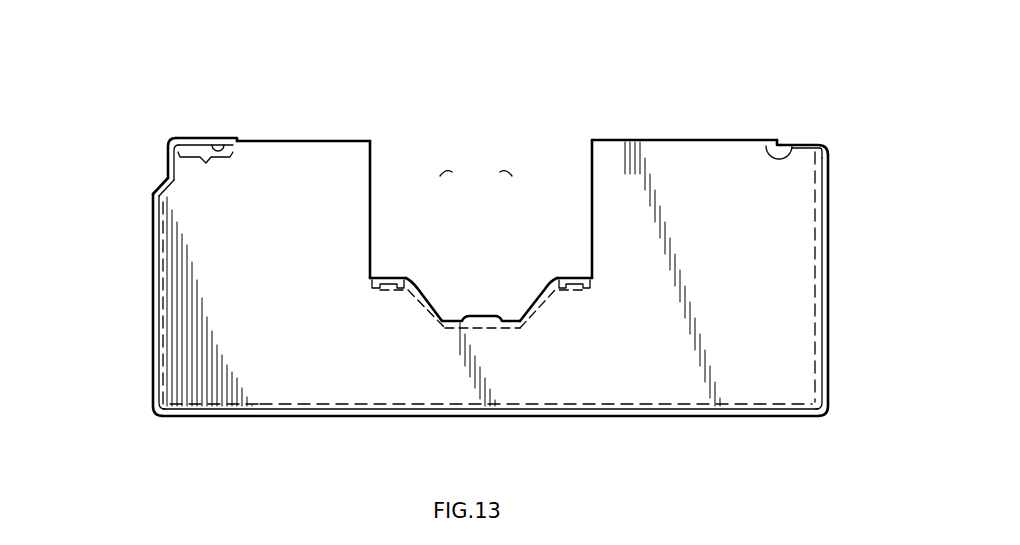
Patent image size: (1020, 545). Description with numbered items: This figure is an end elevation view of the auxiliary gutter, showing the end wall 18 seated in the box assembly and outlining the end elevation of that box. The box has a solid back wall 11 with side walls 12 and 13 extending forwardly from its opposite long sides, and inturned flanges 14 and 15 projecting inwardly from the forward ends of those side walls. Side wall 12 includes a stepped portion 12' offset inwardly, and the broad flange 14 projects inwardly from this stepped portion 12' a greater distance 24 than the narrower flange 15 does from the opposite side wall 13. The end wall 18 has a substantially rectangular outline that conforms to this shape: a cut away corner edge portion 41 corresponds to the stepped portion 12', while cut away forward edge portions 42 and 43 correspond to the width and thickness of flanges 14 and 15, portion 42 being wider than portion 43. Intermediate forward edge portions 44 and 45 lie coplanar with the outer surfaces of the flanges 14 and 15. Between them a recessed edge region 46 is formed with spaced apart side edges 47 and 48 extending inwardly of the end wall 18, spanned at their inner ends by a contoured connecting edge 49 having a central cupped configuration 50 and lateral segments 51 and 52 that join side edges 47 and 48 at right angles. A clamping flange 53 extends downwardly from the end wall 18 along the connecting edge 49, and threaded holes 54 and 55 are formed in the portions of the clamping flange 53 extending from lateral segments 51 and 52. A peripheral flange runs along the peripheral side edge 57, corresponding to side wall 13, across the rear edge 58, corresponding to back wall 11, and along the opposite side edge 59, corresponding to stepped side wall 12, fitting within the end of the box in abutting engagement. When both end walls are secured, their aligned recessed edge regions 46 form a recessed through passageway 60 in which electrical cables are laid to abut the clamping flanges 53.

The back wall 11 is at (318, 418).
The side wall 12 is at (115, 305).
The stepped portion 12' is at (124, 154).
The side wall 13 is at (829, 285).
The inturned flange 14 is at (203, 138).
The inturned flange 15 is at (801, 144).
The end wall 18 is at (800, 370).
The distance 24 is at (205, 171).
The cut away corner edge portion 41 is at (177, 183).
The cut away forward edge portion 42 is at (222, 147).
The cut away forward edge portion 43 is at (769, 152).
The intermediate forward edge portion 44 is at (303, 139).
The intermediate forward edge portion 45 is at (660, 139).
The recessed edge region 46 is at (476, 168).
The side edge 47 is at (372, 158).
The side edge 48 is at (590, 167).
The contoured connecting edge 49 is at (411, 282).
The cupped configuration 50 is at (530, 308).
The lateral segment 51 is at (391, 278).
The lateral segment 52 is at (571, 278).
The clamping flange 53 is at (457, 323).
The threaded hole 54 is at (392, 292).
The threaded hole 55 is at (576, 294).
The peripheral side edge 57 is at (826, 200).
The rear edge 58 is at (660, 408).
The side edge 59 is at (163, 346).
The recessed through passageway 60 is at (482, 132).